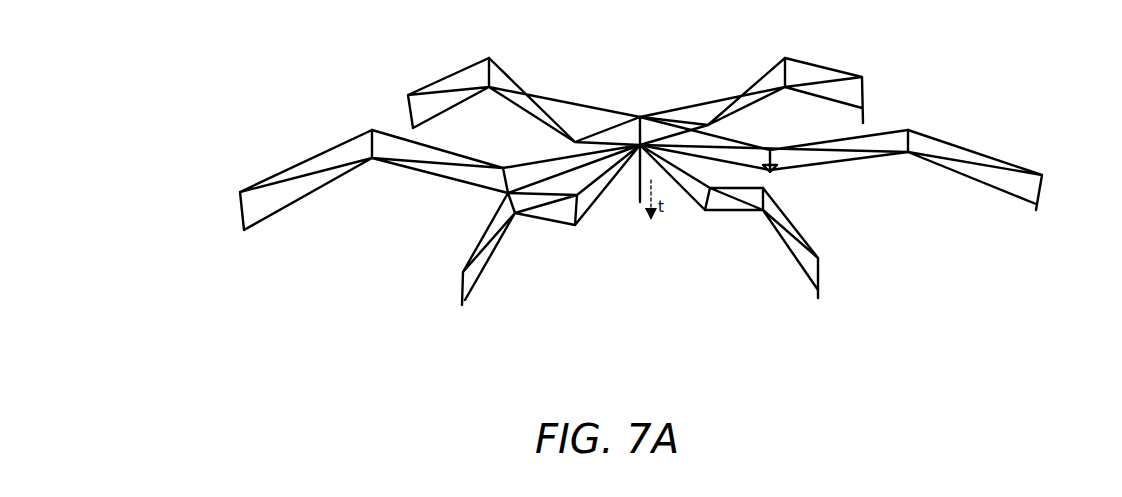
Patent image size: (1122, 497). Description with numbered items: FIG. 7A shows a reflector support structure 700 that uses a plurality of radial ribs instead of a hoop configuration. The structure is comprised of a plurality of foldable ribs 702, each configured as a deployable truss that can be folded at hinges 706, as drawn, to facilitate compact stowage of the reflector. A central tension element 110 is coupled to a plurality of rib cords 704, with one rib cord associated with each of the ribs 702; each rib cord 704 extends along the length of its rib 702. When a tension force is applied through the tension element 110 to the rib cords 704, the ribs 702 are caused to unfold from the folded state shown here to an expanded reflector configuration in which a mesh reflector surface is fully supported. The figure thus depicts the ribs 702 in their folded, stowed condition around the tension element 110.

The reflector support structure 700 is at (618, 198).
The foldable rib 702 is at (430, 73).
The rib cord 704 is at (305, 170).
The hinge 706 is at (372, 128).
The tension element 110 is at (638, 186).